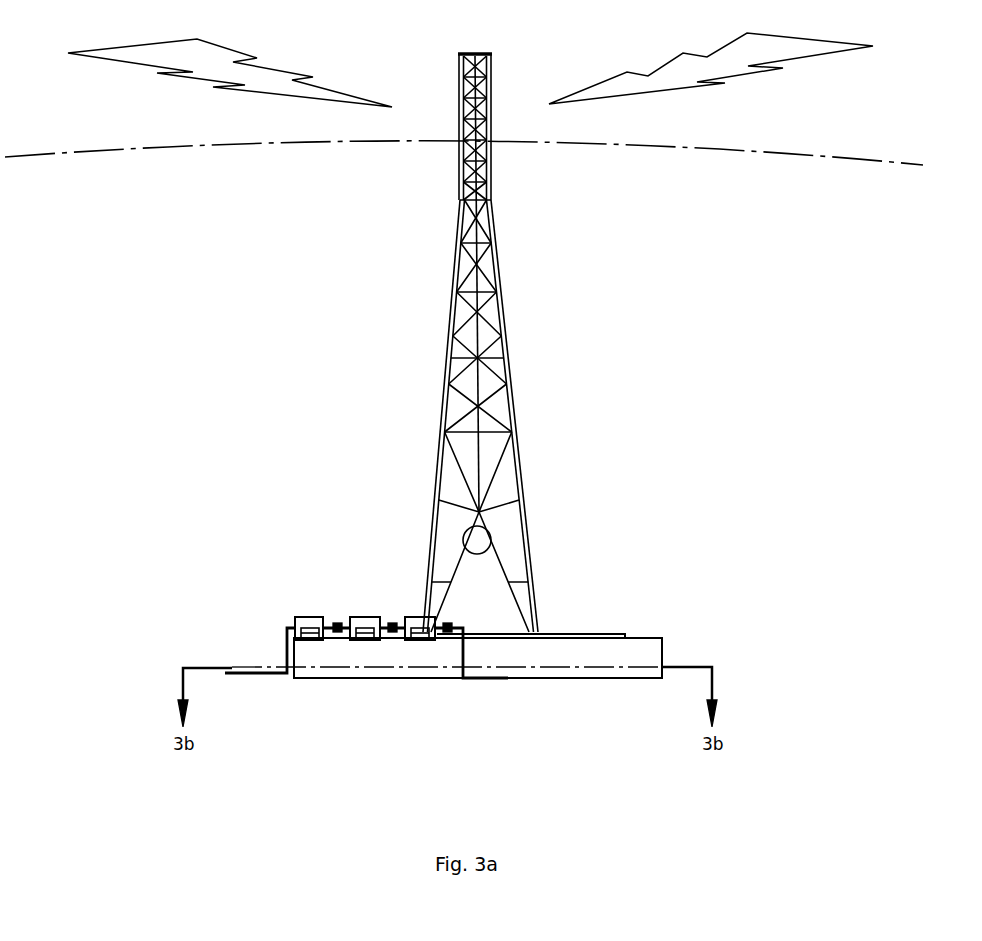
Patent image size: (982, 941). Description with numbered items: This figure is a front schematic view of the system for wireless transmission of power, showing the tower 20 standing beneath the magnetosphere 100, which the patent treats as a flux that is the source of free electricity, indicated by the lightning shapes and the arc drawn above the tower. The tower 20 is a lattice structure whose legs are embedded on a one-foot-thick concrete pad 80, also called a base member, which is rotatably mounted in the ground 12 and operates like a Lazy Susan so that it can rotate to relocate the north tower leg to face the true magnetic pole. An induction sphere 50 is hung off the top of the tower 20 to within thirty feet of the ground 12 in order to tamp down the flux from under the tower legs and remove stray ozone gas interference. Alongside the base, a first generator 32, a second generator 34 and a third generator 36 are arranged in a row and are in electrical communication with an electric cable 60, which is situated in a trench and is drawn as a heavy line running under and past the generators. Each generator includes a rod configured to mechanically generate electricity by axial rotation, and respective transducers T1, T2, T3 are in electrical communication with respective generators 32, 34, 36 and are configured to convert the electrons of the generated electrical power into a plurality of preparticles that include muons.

The magnetosphere 100 is at (767, 127).
The tower 20 is at (527, 239).
The induction sphere 50 is at (480, 538).
The ground 12 is at (655, 638).
The concrete pad 80 is at (599, 635).
The electric cable 60 is at (250, 673).
The first generator 32 is at (303, 617).
The second generator 34 is at (358, 617).
The third generator 36 is at (413, 617).
The transducer T1 is at (312, 640).
The transducer T2 is at (367, 640).
The transducer T3 is at (423, 640).